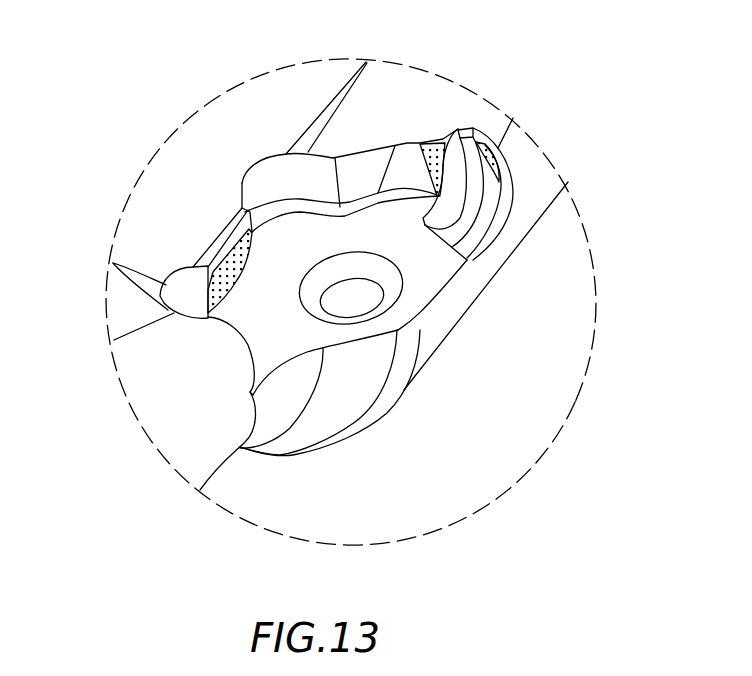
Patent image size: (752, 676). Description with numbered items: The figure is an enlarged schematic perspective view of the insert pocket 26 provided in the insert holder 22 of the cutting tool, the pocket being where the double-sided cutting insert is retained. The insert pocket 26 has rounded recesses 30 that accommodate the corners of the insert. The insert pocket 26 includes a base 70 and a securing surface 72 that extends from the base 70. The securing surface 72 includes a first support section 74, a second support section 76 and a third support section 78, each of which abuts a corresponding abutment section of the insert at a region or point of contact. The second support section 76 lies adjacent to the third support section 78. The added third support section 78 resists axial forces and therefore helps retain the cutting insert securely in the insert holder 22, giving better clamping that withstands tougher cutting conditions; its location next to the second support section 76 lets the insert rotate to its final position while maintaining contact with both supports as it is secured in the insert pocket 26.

The insert holder 22 is at (163, 72).
The insert pocket 26 is at (236, 333).
The rounded recesses 30 is at (167, 305).
The base 70 is at (423, 283).
The securing surface 72 is at (398, 148).
The first support section 74 is at (210, 315).
The second support section 76 is at (438, 140).
The third support section 78 is at (498, 160).